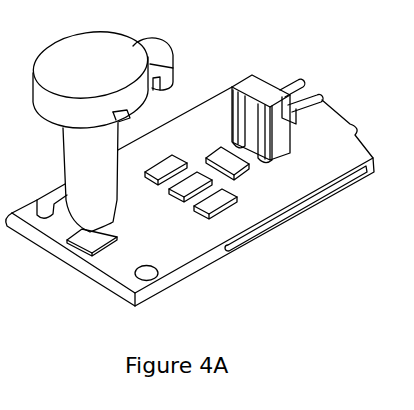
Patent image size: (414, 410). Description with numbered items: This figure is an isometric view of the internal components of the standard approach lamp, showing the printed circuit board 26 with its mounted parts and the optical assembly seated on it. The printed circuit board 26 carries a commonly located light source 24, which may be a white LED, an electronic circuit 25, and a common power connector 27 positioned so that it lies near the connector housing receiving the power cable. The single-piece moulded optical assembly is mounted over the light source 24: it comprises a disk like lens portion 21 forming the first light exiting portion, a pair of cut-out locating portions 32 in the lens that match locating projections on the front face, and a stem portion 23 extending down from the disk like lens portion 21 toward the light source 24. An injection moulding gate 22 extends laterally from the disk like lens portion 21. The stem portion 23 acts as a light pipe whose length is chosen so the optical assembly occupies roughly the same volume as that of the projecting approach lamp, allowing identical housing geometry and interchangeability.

The disk like lens portion 21 is at (48, 123).
The injection moulding gate 22 is at (176, 62).
The stem portion 23 is at (125, 198).
The light source 24 is at (78, 252).
The electronic circuit 25 is at (247, 205).
The printed circuit board 26 is at (212, 268).
The power connector 27 is at (325, 92).
The cut-out locating portions 32 is at (132, 112).